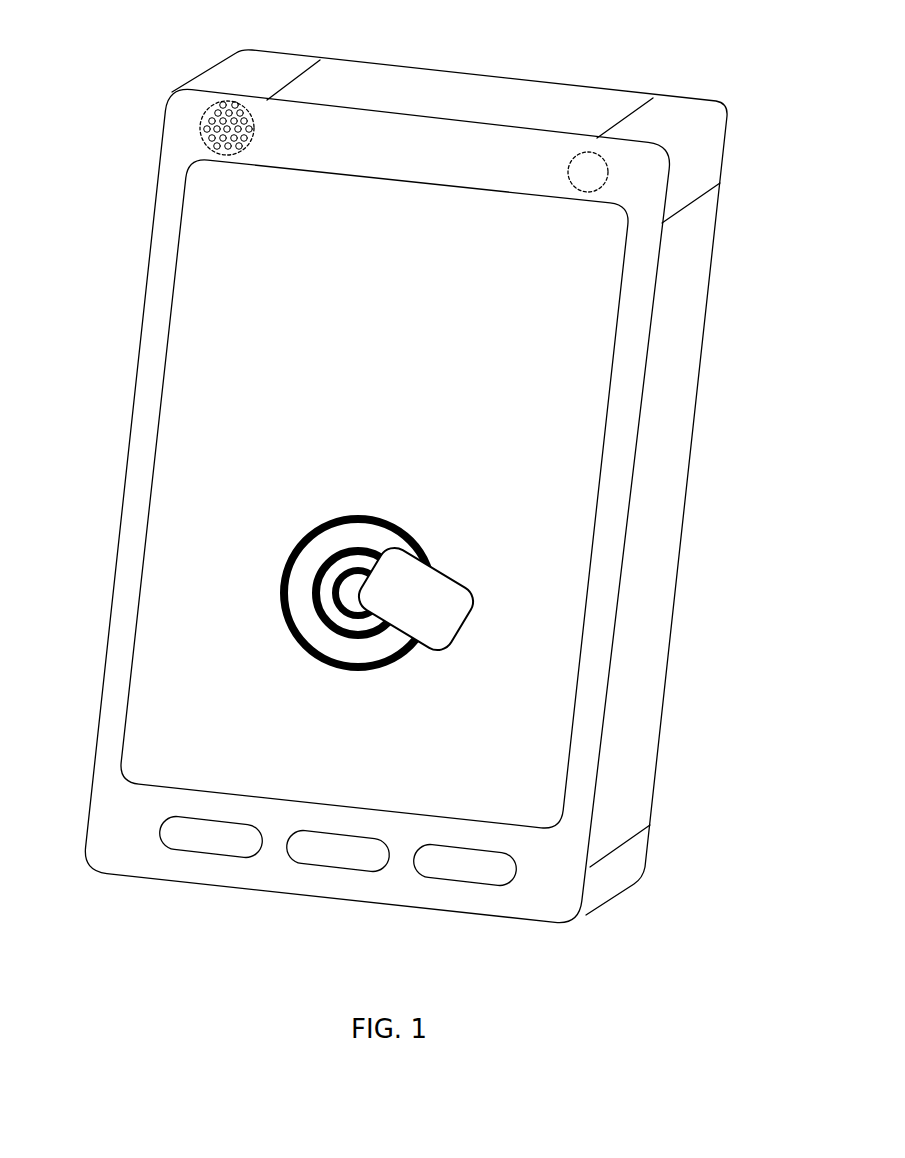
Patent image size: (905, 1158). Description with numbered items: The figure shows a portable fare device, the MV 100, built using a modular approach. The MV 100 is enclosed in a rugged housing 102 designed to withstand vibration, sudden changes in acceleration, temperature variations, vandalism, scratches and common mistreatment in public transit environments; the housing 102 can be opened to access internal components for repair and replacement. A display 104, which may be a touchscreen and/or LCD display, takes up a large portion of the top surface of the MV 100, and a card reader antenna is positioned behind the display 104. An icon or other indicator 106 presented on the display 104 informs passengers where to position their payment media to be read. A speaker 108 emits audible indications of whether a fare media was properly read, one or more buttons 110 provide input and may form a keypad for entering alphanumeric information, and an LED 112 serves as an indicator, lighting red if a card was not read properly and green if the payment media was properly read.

The MV 100 is at (114, 960).
The housing 102 is at (452, 72).
The display 104 is at (573, 341).
The indicator 106 is at (283, 567).
The speaker 108 is at (215, 111).
The buttons 110 is at (498, 883).
The LED 112 is at (608, 166).